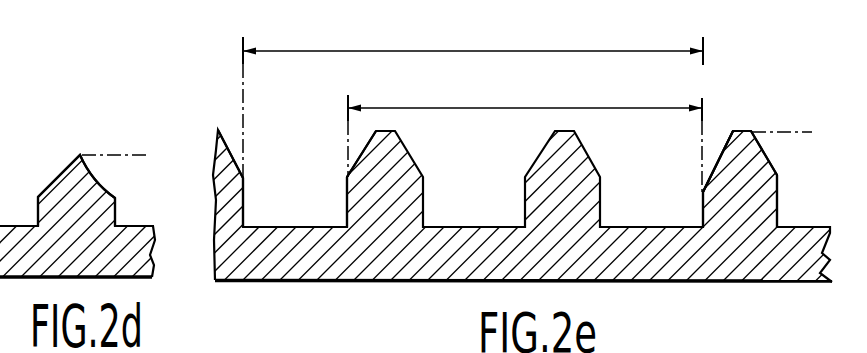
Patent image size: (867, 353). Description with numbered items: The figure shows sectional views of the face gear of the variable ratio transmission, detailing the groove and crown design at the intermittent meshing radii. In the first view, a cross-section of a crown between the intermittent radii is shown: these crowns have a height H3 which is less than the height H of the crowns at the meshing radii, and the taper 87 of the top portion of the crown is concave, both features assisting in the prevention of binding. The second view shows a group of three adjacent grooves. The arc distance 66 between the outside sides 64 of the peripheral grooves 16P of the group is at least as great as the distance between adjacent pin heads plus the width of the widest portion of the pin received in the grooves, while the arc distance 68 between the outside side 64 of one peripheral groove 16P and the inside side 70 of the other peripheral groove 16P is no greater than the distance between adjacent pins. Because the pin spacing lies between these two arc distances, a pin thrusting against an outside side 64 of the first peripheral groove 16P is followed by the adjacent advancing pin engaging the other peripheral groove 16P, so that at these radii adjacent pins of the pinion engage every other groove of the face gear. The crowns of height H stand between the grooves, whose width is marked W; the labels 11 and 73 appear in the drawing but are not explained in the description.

In FIG. 2D, the taper 87 is at (62, 177).
In FIG. 2D, the height H3 is at (143, 155).
In FIG. 2E, the arc distance 66 is at (483, 51).
In FIG. 2E, the arc distance 68 is at (561, 108).
In FIG. 2E, the outside side 64 is at (252, 197).
In FIG. 2E, the inside side 70 is at (345, 200).
In FIG. 2E, the peripheral groove 16P is at (279, 222).
In FIG. 2E, the trapezoidal rib 11 is at (733, 131).
In FIG. 2E, the groove width W is at (525, 207).
In FIG. 2E, the height H is at (803, 132).
In FIG. 2E, the reference numeral (partial) 73 is at (410, 345).